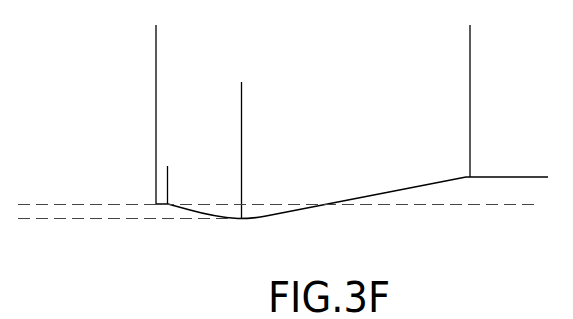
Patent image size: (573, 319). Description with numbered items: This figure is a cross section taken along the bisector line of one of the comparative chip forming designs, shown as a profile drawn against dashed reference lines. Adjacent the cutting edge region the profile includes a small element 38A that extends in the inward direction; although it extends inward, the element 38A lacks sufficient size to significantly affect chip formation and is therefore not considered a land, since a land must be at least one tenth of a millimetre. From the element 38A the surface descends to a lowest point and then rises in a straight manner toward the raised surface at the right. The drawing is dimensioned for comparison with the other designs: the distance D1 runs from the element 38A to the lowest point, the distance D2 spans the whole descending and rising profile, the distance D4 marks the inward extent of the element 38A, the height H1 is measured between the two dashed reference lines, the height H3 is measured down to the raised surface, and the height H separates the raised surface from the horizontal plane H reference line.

The inward-extending element 38A is at (163, 200).
The distance D1 is at (242, 92).
The distance D2 is at (470, 34).
The distance D4 (groove entrance width) D4 is at (200, 177).
The height H1 is at (31, 167).
The height H3 is at (530, 177).
The horizontal plane H is at (530, 177).